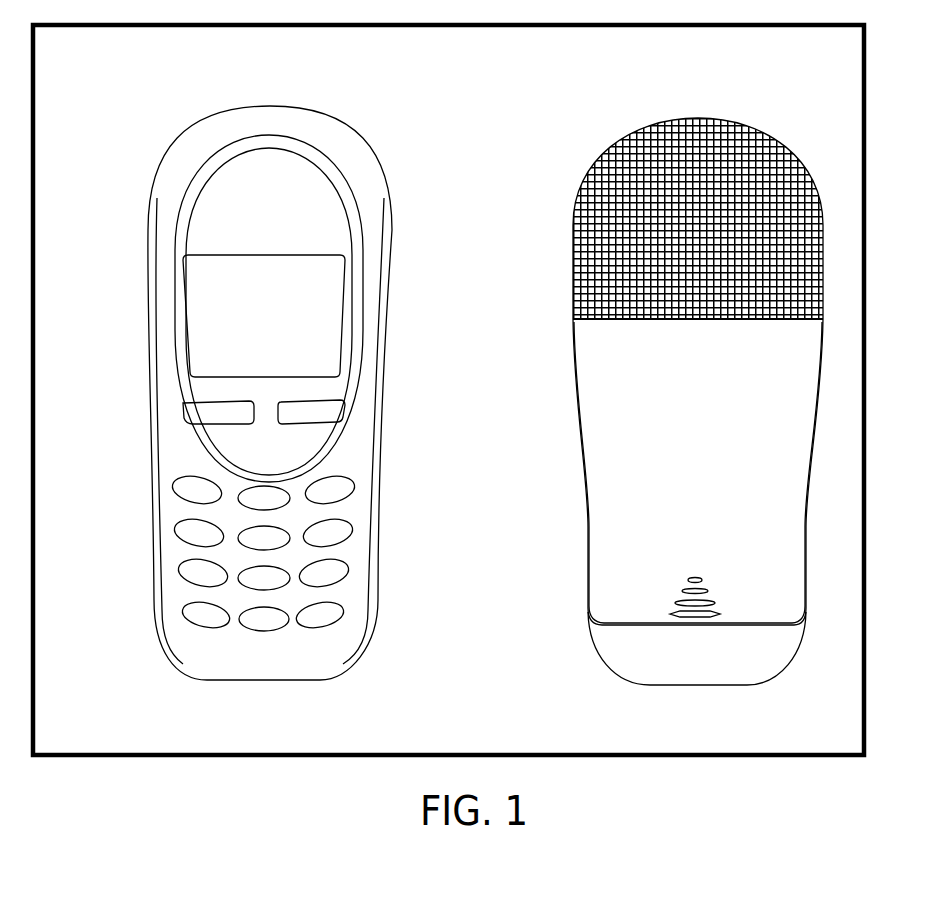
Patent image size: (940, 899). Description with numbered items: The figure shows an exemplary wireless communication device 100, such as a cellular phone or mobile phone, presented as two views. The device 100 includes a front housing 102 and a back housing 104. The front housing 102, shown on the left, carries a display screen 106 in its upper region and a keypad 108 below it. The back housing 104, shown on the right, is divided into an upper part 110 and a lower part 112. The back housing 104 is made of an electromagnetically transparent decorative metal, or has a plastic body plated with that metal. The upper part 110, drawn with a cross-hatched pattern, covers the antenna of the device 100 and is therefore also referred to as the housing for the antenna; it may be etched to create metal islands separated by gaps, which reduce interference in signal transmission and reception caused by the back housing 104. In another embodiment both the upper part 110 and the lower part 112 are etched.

The wireless communication device 100 is at (936, 788).
The front housing 102 is at (242, 680).
The back housing 104 is at (691, 685).
The display screen 106 is at (286, 330).
The keypad 108 is at (185, 407).
The upper part 110 is at (757, 145).
The lower part 112 is at (728, 467).